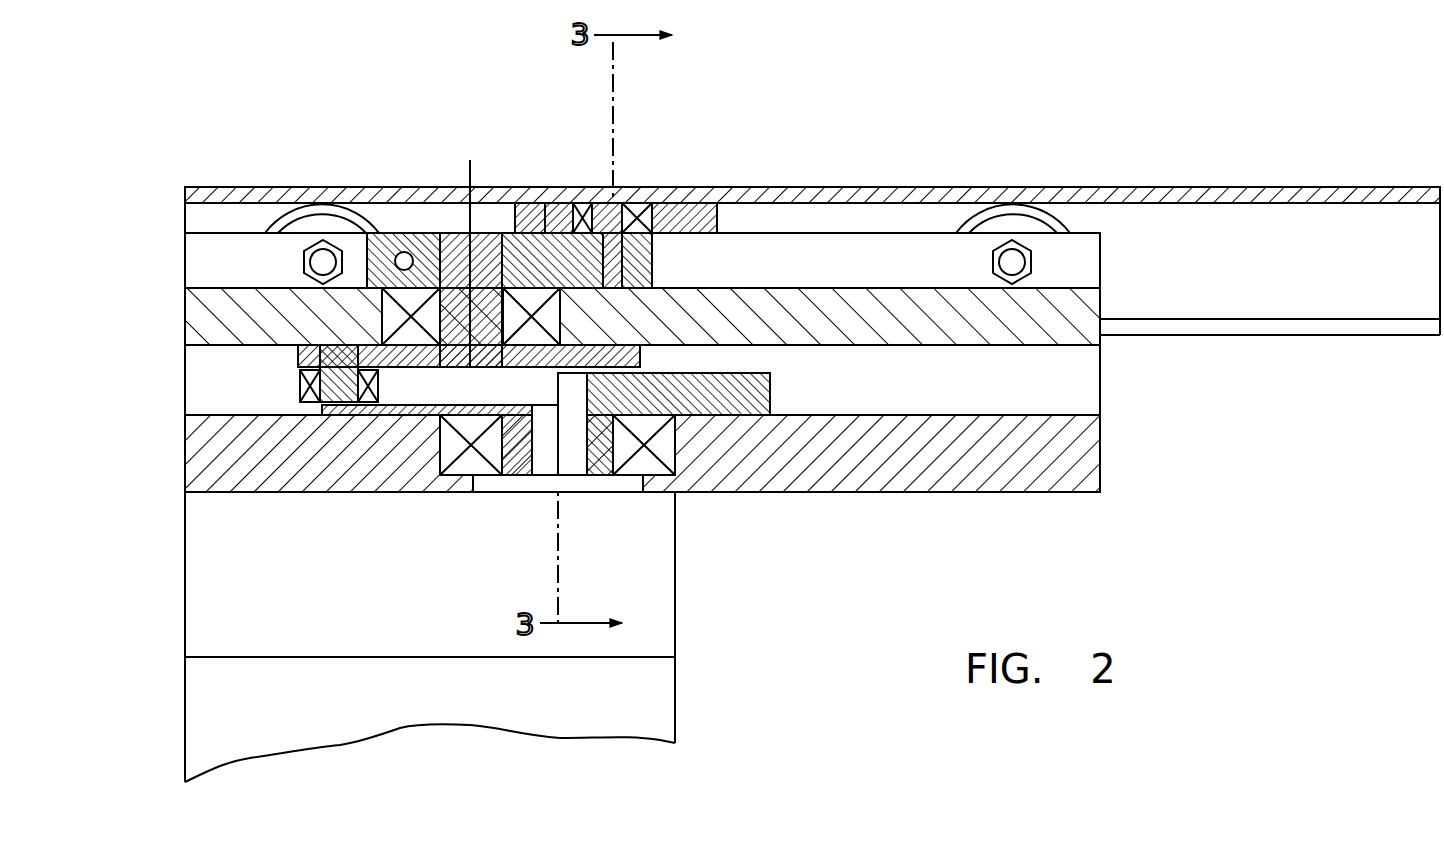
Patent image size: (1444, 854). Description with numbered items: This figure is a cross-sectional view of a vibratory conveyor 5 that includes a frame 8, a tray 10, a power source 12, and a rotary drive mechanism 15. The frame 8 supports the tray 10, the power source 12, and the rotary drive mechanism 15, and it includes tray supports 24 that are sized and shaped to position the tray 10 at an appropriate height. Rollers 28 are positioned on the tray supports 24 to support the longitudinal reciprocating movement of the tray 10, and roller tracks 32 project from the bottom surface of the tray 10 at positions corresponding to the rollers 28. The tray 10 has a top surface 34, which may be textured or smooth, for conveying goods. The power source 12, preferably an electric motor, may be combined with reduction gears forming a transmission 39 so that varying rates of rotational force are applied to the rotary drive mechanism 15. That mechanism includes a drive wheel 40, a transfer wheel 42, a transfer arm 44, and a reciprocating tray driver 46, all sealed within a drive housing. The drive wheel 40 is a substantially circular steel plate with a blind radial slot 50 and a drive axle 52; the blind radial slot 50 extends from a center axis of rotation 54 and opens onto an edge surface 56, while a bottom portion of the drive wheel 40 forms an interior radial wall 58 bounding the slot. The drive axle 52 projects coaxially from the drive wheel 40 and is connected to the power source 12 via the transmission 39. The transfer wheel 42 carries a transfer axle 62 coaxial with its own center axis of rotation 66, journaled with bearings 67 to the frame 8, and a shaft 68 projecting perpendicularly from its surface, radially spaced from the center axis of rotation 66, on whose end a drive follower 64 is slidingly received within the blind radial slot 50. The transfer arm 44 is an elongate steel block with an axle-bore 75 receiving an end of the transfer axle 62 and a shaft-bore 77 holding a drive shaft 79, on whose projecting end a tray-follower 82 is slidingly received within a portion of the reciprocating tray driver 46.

The vibratory conveyor 5 is at (860, 98).
The frame 8 is at (1115, 490).
The tray 10 is at (298, 194).
The power source 12 is at (684, 706).
The rotary drive mechanism 15 is at (272, 392).
The tray supports 24 is at (1090, 265).
The rollers 28 is at (280, 224).
The roller tracks 32 is at (1365, 245).
The top surface 34 is at (868, 188).
The transmission 39 is at (650, 642).
The drive wheel 40 is at (785, 398).
The transfer wheel 42 is at (660, 357).
The transfer arm 44 is at (663, 257).
The reciprocating tray driver 46 is at (504, 207).
The blind radial slot 50 is at (413, 393).
The drive axle 52 is at (578, 455).
The center axis of rotation 54 is at (558, 546).
The edge surface 56 is at (318, 405).
The interior radial wall 58 is at (497, 468).
The transfer axle 62 is at (370, 233).
The drive follower 64 is at (292, 373).
The center axis of rotation 66 is at (443, 228).
The bearings 67 is at (392, 313).
The shaft 68 is at (330, 325).
The axle-bore 75 is at (443, 232).
The shaft-bore 77 is at (621, 240).
The drive shaft 79 is at (546, 207).
The tray-follower 82 is at (578, 207).